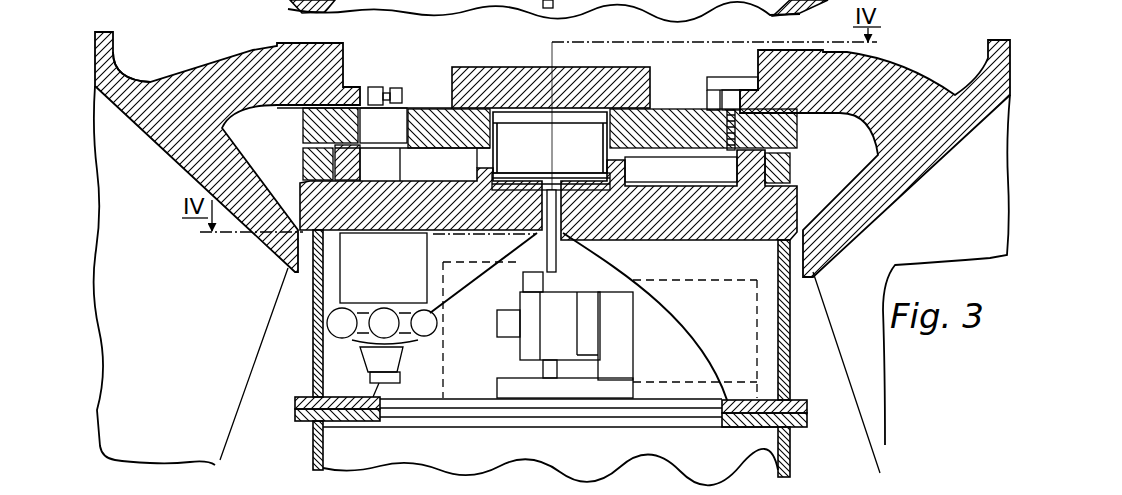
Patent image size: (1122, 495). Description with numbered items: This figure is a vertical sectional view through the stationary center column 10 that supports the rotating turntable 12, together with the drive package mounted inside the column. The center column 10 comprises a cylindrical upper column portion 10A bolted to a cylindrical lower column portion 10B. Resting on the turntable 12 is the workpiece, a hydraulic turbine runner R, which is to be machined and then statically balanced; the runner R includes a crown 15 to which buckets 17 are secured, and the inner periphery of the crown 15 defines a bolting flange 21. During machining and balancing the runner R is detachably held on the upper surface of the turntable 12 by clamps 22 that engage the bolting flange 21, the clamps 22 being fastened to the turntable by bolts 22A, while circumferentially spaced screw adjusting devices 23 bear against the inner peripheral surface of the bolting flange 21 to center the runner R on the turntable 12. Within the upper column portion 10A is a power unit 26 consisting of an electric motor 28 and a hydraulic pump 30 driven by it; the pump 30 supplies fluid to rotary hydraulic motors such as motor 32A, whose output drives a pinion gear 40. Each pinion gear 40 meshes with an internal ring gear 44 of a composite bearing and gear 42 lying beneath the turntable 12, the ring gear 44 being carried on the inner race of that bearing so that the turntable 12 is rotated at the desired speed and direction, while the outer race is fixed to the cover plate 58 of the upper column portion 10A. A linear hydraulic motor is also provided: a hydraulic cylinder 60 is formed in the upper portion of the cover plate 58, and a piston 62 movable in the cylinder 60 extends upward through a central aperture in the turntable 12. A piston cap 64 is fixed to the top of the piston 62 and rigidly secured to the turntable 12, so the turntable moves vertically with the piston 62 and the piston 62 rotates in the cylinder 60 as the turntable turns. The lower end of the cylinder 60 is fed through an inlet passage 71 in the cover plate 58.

The workpiece runner R is at (216, 60).
The stationary center column 10 is at (296, 421).
The upper column portion 10A is at (791, 372).
The lower column portion 10B is at (789, 455).
The turntable 12 is at (422, 107).
The crown 15 is at (167, 152).
The buckets 17 is at (862, 408).
The bolting flange 21 is at (320, 45).
The clamps 22 is at (706, 78).
The bolts 22A is at (726, 89).
The screw adjusting devices 23 is at (382, 86).
The power unit 26 is at (658, 282).
The electric motor 28 is at (724, 280).
The hydraulic pump 30 is at (570, 298).
The rotary hydraulic motor 32A is at (433, 339).
The pinion gear 40 is at (400, 160).
The composite bearing and gear 42 is at (302, 158).
The internal ring gear 44 is at (383, 127).
The cover plate 58 is at (608, 234).
The hydraulic cylinder 60 is at (616, 166).
The piston 62 is at (542, 153).
The piston cap 64 is at (518, 62).
The inlet passage 71 is at (558, 212).